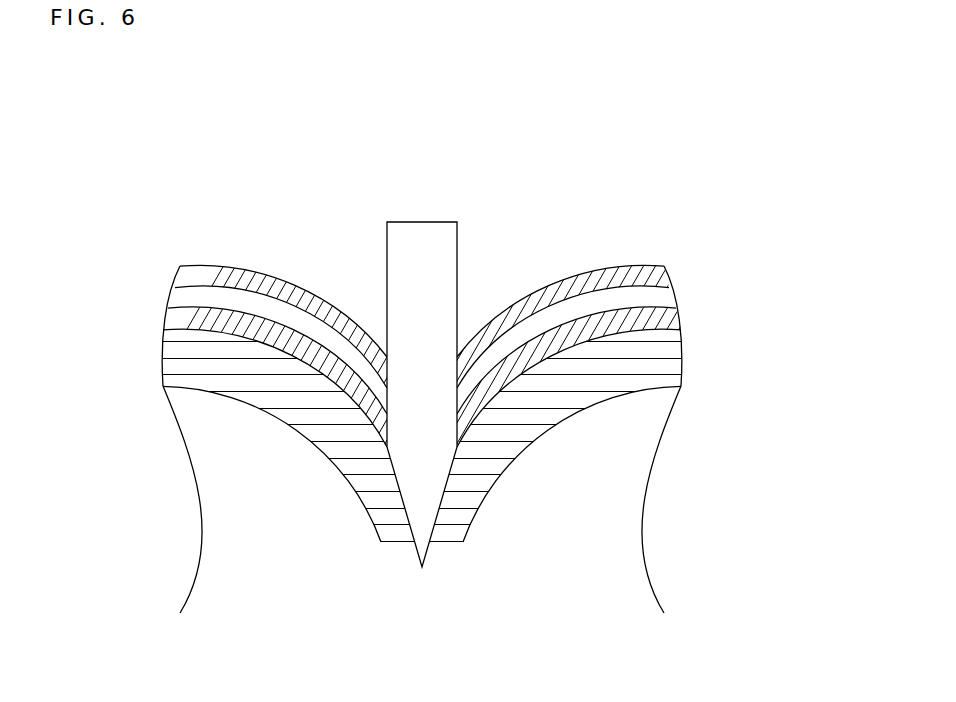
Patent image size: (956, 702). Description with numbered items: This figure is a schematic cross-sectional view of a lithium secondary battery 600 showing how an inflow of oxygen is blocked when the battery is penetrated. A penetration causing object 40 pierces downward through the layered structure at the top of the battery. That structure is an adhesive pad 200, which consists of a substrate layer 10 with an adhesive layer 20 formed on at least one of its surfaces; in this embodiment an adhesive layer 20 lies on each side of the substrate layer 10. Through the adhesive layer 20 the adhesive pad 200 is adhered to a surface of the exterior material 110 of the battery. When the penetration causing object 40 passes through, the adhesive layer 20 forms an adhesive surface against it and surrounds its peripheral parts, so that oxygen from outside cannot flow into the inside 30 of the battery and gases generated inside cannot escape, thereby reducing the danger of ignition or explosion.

The light emitting device 600 is at (147, 150).
The penetration causing object 40 is at (425, 238).
The adhesive layer 20 is at (673, 280).
The substrate layer 10 is at (664, 298).
The adhesive pad 200 is at (760, 234).
The exterior material 110 is at (682, 381).
The inside of the battery 30 is at (633, 497).